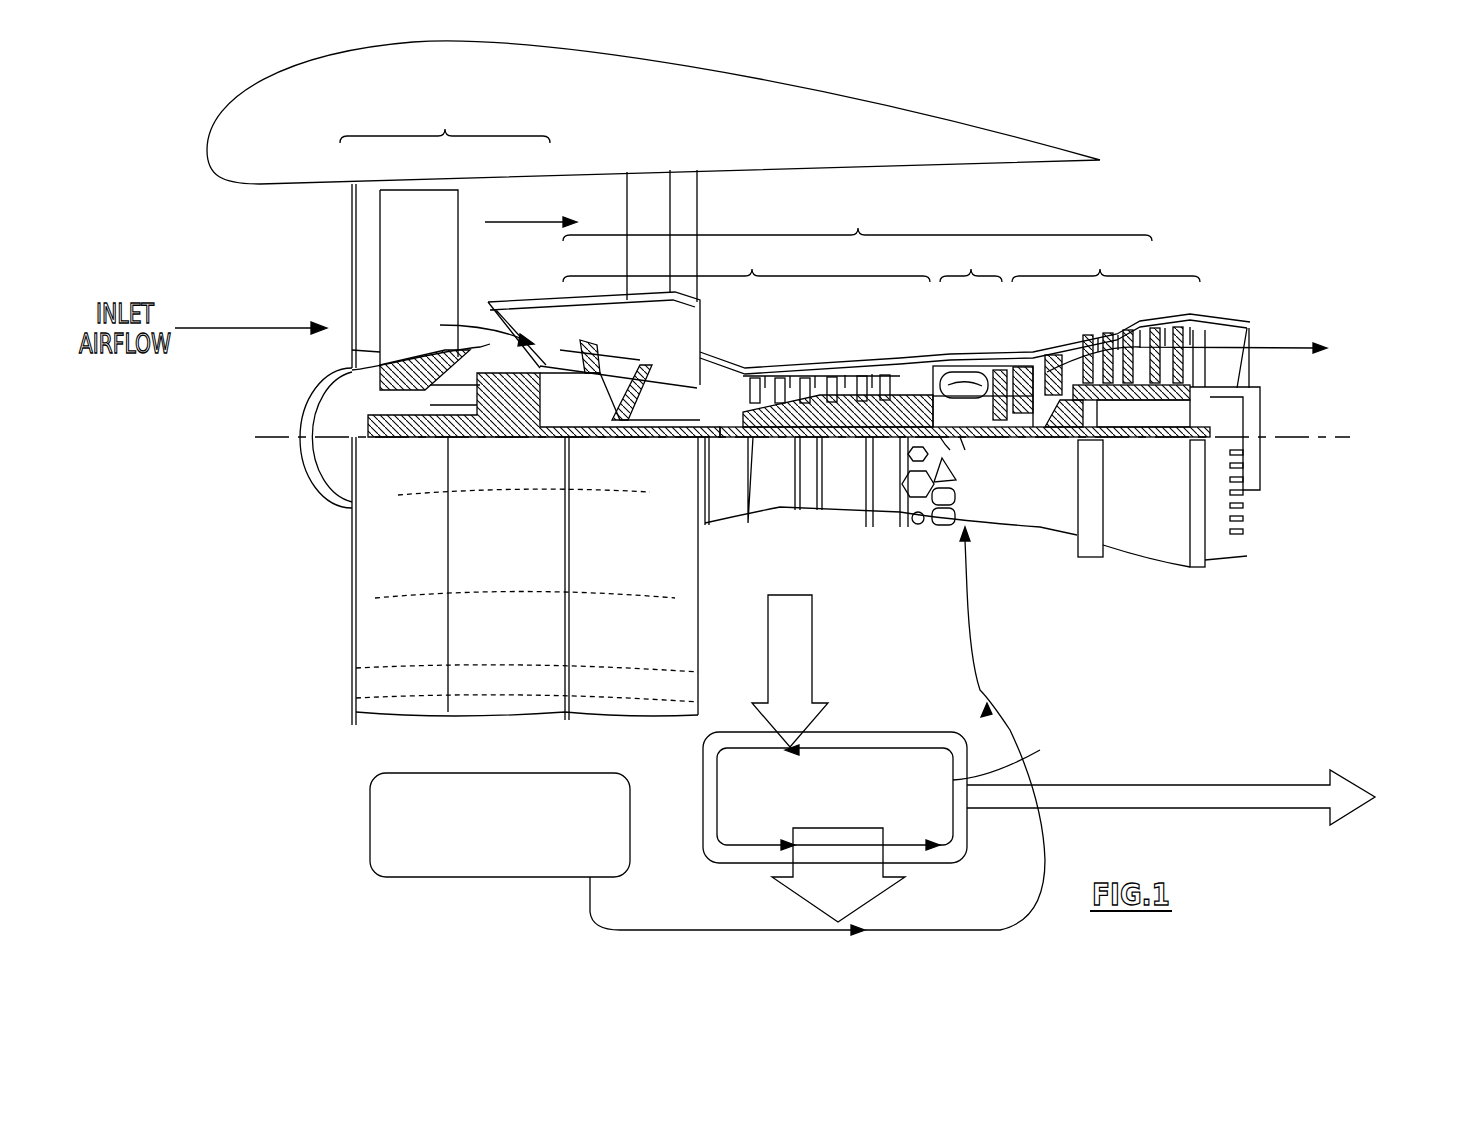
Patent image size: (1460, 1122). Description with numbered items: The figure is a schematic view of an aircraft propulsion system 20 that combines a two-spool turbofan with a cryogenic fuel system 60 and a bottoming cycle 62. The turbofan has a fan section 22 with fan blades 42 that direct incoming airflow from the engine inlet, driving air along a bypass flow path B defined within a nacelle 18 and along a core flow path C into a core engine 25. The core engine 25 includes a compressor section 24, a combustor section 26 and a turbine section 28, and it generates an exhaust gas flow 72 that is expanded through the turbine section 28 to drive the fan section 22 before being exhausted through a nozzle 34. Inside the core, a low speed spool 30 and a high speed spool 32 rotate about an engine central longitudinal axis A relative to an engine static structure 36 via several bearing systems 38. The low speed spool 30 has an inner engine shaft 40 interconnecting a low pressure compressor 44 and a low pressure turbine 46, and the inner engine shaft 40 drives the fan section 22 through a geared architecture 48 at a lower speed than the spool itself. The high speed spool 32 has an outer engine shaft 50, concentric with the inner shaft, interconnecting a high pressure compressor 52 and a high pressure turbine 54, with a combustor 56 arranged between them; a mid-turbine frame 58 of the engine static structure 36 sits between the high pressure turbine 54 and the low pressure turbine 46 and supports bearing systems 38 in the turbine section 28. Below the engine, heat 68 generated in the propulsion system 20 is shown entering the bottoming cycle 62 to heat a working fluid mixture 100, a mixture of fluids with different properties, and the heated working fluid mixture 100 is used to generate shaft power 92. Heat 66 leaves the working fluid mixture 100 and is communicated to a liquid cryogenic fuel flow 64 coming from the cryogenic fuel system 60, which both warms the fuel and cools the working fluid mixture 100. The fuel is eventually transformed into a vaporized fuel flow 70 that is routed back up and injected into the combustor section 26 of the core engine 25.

The nacelle 18 is at (685, 100).
The aircraft propulsion system 20 is at (1138, 108).
The fan section 22 is at (445, 120).
The compressor section 24 is at (746, 260).
The core engine 25 is at (857, 219).
The combustor section 26 is at (971, 260).
The turbine section 28 is at (1106, 260).
The low speed spool 30 is at (845, 452).
The high speed spool 32 is at (882, 400).
The nozzle 34 is at (1168, 545).
The engine static structure 36 is at (883, 532).
The bearing systems 38 is at (425, 438).
The inner engine shaft 40 is at (722, 522).
The fan blades 42 is at (432, 294).
The low pressure compressor 44 is at (688, 300).
The low pressure turbine 46 is at (1137, 328).
The geared architecture 48 is at (530, 438).
The outer engine shaft 50 is at (965, 430).
The high pressure compressor 52 is at (830, 395).
The high pressure turbine 54 is at (1020, 360).
The combustor 56 is at (960, 382).
The mid-turbine frame 58 is at (1062, 345).
The cryogenic fuel system 60 is at (370, 812).
The bottoming cycle 62 is at (920, 732).
The liquid cryogenic fuel flow 64 is at (668, 925).
The heat 66 is at (878, 885).
The heat 68 is at (805, 660).
The vaporized fuel flow 70 is at (975, 612).
The exhaust gas flow 72 is at (1278, 345).
The shaft power 92 is at (1337, 780).
The working fluid mixture 100 is at (1024, 755).
The engine central longitudinal axis A is at (1332, 430).
The bypass flow path B is at (528, 222).
The core flow path C is at (471, 328).